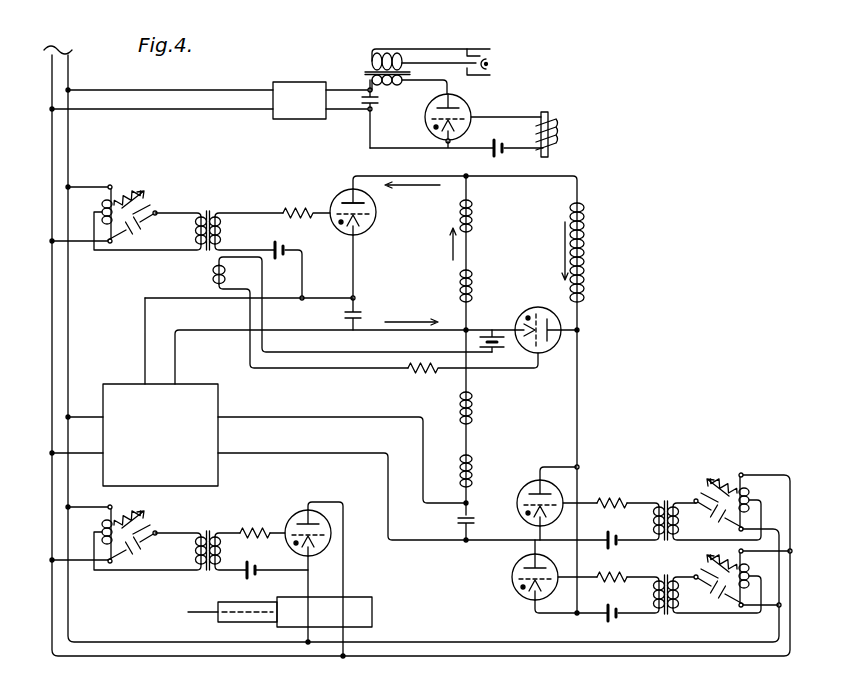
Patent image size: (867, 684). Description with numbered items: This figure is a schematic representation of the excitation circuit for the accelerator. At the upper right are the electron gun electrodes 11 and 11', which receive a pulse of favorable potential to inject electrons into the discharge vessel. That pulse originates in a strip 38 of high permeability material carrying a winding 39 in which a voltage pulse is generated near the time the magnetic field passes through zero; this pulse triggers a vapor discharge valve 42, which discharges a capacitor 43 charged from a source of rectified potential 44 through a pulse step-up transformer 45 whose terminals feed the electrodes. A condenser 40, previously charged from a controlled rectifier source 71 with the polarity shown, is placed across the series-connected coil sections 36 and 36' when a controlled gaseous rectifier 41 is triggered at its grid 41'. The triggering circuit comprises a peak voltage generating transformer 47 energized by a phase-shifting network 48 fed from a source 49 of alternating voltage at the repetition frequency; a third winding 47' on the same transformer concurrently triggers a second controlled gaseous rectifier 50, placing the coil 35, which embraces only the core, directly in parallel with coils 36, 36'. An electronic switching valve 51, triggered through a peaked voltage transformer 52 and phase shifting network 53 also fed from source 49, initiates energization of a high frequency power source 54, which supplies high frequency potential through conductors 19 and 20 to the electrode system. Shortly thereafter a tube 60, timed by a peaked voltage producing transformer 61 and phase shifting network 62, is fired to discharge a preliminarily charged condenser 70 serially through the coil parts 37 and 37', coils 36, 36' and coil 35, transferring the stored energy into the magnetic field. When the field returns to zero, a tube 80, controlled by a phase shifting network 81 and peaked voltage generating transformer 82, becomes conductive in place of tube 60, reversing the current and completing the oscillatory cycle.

The electrode 11 is at (490, 66).
The electrode 11' is at (487, 43).
The conductor 19 is at (238, 622).
The conductor 20 is at (192, 612).
The coil 35 is at (585, 250).
The coil section 36 is at (483, 223).
The coil section 36' is at (484, 331).
The coil part 37 is at (485, 423).
The coil part 37' is at (485, 485).
The strip 38 is at (550, 153).
The winding 39 is at (552, 118).
The condenser 40 is at (360, 313).
The controlled gaseous rectifier 41 is at (453, 237).
The grid 41' is at (379, 202).
The vapor discharge valve 42 is at (466, 104).
The capacitor 43 is at (380, 100).
The source of rectified potential 44 is at (299, 82).
The pulse step-up transformer 45 is at (370, 72).
The peak voltage generating transformer 47 is at (212, 246).
The third winding 47' is at (331, 312).
The phase-shifting network 48 is at (150, 222).
The source of alternating voltage 49 is at (60, 145).
The controlled gaseous rectifier 50 is at (537, 310).
The electronic switching valve 51 is at (306, 511).
The peaked voltage transformer 52 is at (210, 531).
The phase shifting network 53 is at (150, 541).
The high frequency power source 54 is at (366, 597).
The tube 60 is at (520, 518).
The peaked voltage producing transformer 61 is at (666, 495).
The phase shifting network 62 is at (718, 502).
The condenser 70 is at (456, 521).
The controlled rectifier source 71 is at (218, 394).
The tube 80 is at (515, 593).
The phase shifting network 81 is at (739, 579).
The peaked voltage generating transformer 82 is at (666, 575).